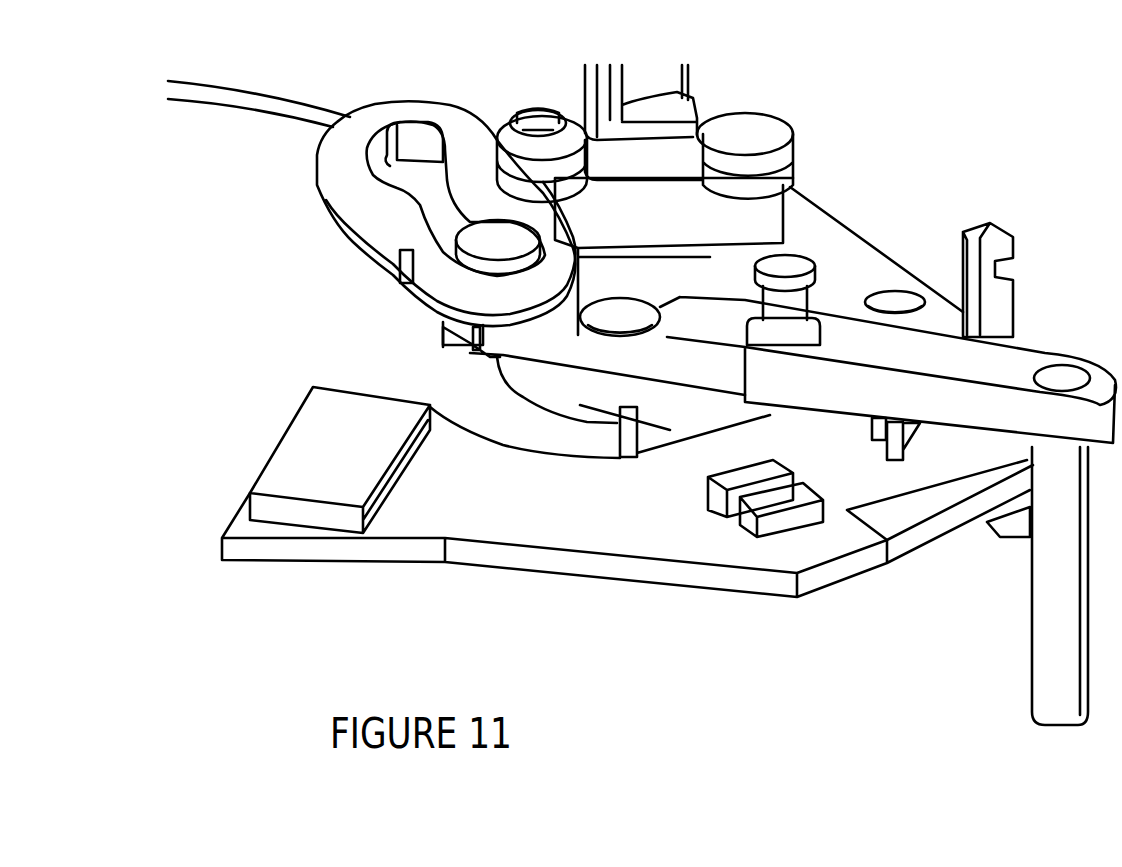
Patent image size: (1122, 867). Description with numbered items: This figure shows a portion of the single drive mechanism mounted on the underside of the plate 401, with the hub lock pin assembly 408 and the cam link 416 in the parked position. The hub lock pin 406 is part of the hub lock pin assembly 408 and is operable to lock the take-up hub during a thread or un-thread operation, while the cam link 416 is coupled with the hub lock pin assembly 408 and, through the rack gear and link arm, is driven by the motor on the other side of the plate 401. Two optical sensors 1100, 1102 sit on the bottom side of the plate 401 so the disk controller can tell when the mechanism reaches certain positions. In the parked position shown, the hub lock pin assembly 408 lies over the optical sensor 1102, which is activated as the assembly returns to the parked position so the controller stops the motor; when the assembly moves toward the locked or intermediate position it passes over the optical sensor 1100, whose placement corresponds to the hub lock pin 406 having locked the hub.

The plate 401 is at (543, 512).
The hub lock pin 406 is at (1074, 619).
The hub lock pin assembly 408 is at (923, 365).
The cam link 416 is at (647, 172).
The optical sensor 1100 is at (733, 520).
The optical sensor 1102 is at (908, 478).